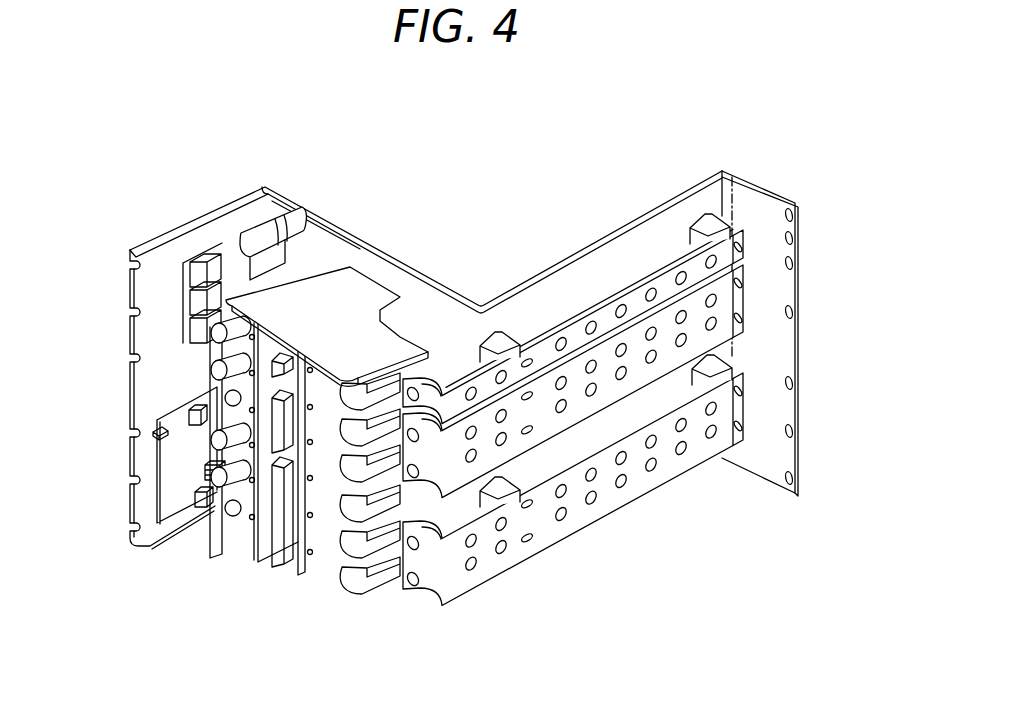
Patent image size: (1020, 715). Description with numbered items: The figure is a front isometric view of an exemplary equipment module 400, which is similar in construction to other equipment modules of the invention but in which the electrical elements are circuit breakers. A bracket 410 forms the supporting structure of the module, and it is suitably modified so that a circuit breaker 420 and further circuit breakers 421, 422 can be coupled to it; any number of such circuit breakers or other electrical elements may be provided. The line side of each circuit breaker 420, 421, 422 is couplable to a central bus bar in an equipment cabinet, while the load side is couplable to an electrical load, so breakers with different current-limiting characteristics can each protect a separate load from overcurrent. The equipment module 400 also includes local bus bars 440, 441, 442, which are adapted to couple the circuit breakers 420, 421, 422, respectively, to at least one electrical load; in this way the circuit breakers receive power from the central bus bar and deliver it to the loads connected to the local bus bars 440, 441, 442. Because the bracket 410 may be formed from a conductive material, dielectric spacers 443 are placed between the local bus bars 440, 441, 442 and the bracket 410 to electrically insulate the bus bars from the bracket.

The equipment module 400 is at (511, 118).
The bracket 410 is at (266, 188).
The circuit breaker 420 is at (328, 562).
The circuit breaker 421 is at (265, 423).
The circuit breaker 422 is at (363, 287).
The local bus bar 440 is at (487, 567).
The local bus bar 441 is at (540, 423).
The local bus bar 442 is at (637, 307).
The dielectric spacers 443 is at (500, 345).